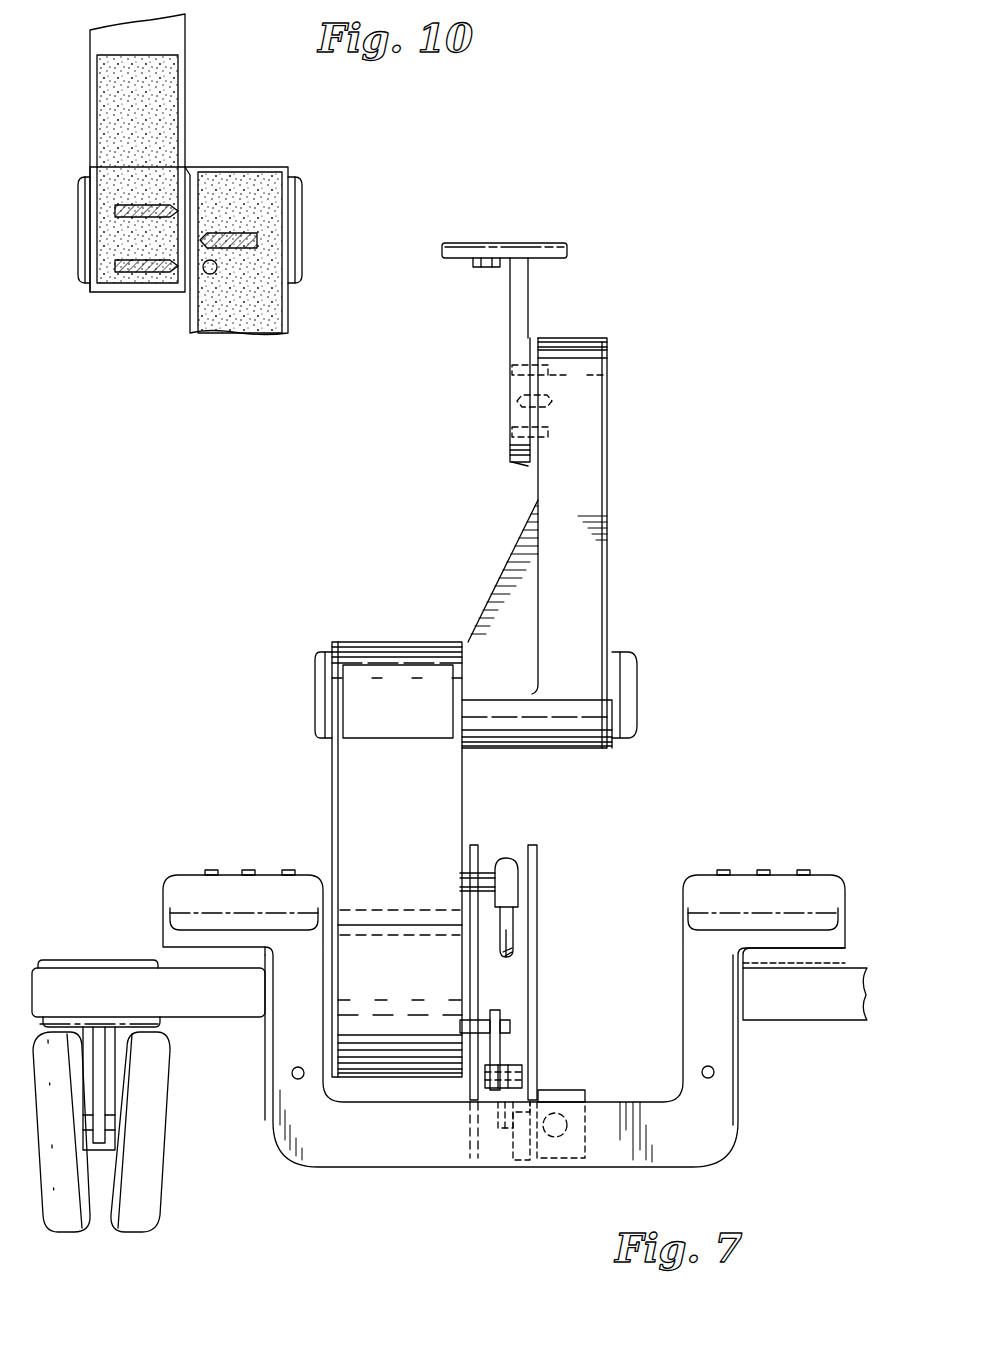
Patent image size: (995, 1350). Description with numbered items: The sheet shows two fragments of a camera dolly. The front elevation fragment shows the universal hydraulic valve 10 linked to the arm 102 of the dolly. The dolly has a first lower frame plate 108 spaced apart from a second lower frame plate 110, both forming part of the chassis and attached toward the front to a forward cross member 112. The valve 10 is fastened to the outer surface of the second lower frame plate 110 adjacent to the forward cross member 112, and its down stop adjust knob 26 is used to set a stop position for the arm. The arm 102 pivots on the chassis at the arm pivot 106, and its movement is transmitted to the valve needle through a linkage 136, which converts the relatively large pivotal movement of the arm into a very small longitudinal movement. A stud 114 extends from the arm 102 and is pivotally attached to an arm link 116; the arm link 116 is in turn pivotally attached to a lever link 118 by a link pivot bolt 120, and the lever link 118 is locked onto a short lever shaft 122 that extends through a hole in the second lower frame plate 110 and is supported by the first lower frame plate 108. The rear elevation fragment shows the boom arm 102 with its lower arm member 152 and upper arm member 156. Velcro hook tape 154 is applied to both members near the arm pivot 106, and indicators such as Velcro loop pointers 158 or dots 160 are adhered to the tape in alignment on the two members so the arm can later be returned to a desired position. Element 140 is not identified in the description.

In FIG. 7, the valve 10 is at (551, 1160).
In FIG. 7, the down stop adjust knob 26 is at (570, 1125).
In FIG. 10, the arm 102 is at (306, 302).
In FIG. 7, the arm 102 is at (365, 754).
In FIG. 7, the arm pivot 106 is at (405, 905).
In FIG. 7, the first lower frame plate 108 is at (486, 848).
In FIG. 7, the second lower frame plate 110 is at (557, 845).
In FIG. 7, the forward cross member 112 is at (358, 1160).
In FIG. 7, the stud 114 is at (490, 1010).
In FIG. 7, the arm link 116 is at (504, 1042).
In FIG. 7, the lever link 118 is at (498, 1120).
In FIG. 7, the link pivot bolt 120 is at (522, 1068).
In FIG. 7, the short lever shaft 122 is at (524, 1128).
In FIG. 7, the linkage 136 is at (462, 1070).
In FIG. 7, the latch pin 140 is at (516, 908).
In FIG. 10, the lower arm member 152 is at (178, 24).
In FIG. 7, the lower arm member 152 is at (580, 450).
In FIG. 10, the Velcro hook tape 154 is at (168, 98).
In FIG. 10, the upper arm member 156 is at (258, 178).
In FIG. 7, the upper arm member 156 is at (350, 808).
In FIG. 10, the Velcro loop pointers 158 is at (240, 238).
In FIG. 10, the dots 160 is at (215, 275).